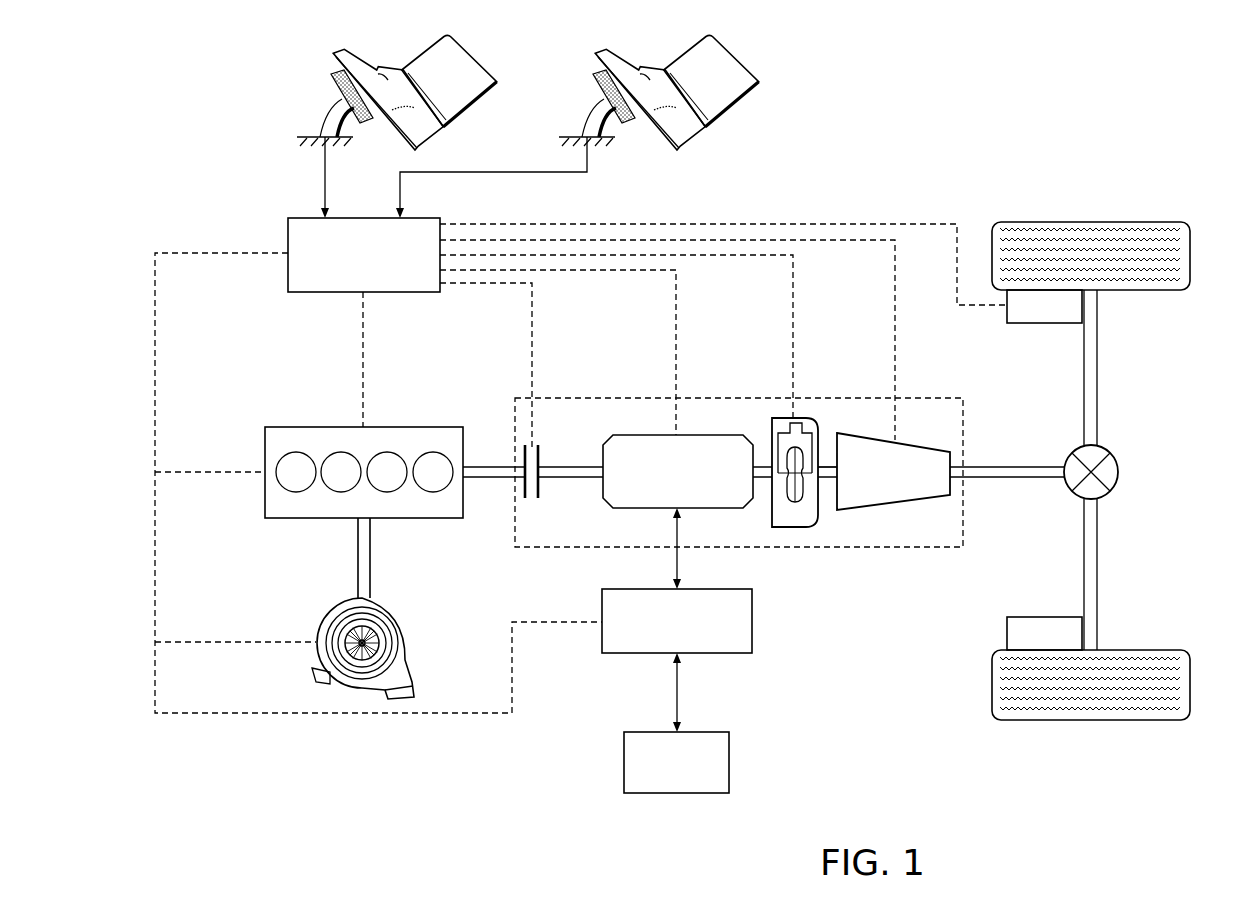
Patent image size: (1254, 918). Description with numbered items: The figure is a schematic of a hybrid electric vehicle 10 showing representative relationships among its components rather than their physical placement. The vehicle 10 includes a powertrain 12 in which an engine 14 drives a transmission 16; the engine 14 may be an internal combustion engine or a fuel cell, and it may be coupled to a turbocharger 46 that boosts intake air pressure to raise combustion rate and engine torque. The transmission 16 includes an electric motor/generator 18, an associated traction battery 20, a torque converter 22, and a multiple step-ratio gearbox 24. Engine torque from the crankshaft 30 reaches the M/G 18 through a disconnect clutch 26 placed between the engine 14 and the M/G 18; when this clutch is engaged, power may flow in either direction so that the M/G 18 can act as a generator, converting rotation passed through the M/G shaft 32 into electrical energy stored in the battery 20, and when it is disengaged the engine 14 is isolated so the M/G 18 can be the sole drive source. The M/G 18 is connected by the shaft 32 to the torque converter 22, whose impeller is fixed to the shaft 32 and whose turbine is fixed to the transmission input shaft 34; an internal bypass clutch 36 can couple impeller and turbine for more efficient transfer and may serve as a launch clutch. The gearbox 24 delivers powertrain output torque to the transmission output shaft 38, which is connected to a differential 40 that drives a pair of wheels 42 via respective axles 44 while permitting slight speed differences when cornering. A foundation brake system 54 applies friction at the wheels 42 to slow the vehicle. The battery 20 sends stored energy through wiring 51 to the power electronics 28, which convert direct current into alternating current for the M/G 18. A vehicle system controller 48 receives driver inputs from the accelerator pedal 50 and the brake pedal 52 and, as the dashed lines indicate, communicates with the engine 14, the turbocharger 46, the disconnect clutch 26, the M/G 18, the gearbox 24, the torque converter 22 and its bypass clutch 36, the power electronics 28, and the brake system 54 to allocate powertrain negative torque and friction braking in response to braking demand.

The hybrid electric vehicle 10 is at (876, 133).
The powertrain 12 is at (361, 760).
The engine 14 is at (317, 427).
The transmission 16 is at (748, 398).
The electric motor/generator (M/G) 18 is at (650, 435).
The traction battery 20 is at (624, 764).
The torque converter 22 is at (793, 527).
The gearbox 24 is at (893, 504).
The disconnect clutch 26 is at (542, 488).
The power electronics 28 is at (602, 606).
The crankshaft 30 is at (490, 466).
The M/G shaft 32 is at (560, 466).
The transmission input shaft 34 is at (827, 466).
The torque converter bypass clutch 36 is at (795, 418).
The transmission output shaft 38 is at (1007, 466).
The differential 40 is at (1118, 477).
The wheels 42 is at (1092, 222).
The axles 44 is at (1099, 371).
The turbocharger 46 is at (332, 610).
The vehicle system controller (VSC) 48 is at (300, 218).
The accelerator pedal 50 is at (331, 93).
The wiring 51 is at (680, 698).
The brake pedal 52 is at (593, 93).
The foundation brake system 54 is at (1042, 323).